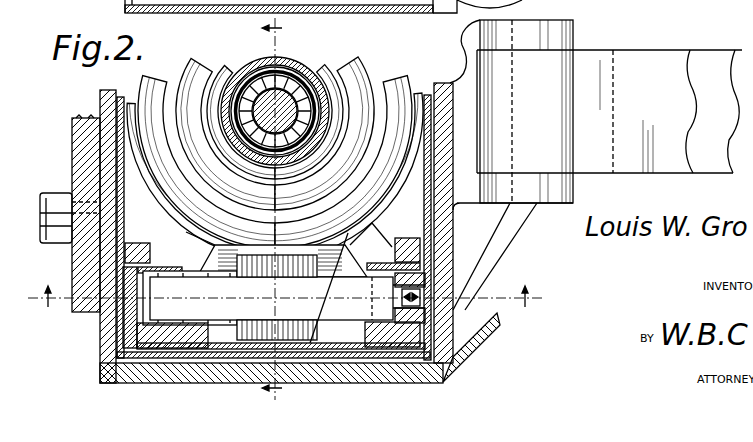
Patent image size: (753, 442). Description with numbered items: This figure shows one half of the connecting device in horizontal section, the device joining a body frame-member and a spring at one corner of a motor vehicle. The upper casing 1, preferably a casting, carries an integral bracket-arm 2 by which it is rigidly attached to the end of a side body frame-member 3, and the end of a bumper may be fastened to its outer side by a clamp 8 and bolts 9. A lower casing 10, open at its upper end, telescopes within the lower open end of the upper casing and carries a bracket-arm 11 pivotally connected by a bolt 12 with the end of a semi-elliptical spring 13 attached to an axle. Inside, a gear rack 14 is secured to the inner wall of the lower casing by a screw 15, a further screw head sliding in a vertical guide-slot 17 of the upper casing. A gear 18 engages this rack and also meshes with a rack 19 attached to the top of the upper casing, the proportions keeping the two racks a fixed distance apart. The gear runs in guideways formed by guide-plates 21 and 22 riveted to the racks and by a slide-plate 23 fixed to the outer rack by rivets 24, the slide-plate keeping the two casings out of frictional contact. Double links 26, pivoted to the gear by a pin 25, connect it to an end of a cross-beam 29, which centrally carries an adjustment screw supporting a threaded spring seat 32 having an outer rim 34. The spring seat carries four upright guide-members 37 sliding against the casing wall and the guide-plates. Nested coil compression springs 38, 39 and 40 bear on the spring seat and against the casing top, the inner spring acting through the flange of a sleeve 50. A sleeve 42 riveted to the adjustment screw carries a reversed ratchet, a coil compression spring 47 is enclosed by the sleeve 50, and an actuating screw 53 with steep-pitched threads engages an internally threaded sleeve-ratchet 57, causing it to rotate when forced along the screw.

The upper casing 1 is at (178, 364).
The bracket-arm 2 is at (483, 343).
The side body frame-member 3 is at (278, 209).
The clamp 8 is at (85, 170).
The bolts 9 is at (40, 206).
The lower casing 10 is at (100, 355).
The bracket-arm 11 is at (518, 222).
The bolt 12 is at (587, 43).
The semi-elliptical spring 13 is at (662, 70).
The gear rack 14 is at (453, 270).
The screw 15 is at (453, 304).
The vertical guide-slot 17 is at (440, 290).
The gear 18 is at (130, 362).
The rack 19 is at (97, 325).
The guide-plate 21 is at (386, 259).
The guide-plate 22 is at (76, 268).
The slide-plate 23 is at (362, 358).
The rivets 24 is at (100, 364).
The pin 25 is at (306, 243).
The double links 26 is at (245, 263).
The cross-beam 29 is at (225, 262).
The spring seat 32 is at (360, 182).
The outer rim 34 is at (162, 190).
The upright guide-members 37 is at (151, 253).
The coil compression spring 38 is at (160, 72).
The coil compression spring 39 is at (191, 62).
The coil compression spring 40 is at (226, 64).
The sleeve 42 is at (327, 67).
The coil compression spring 47 is at (302, 97).
The sleeve 50 is at (298, 68).
The actuating screw 53 is at (310, 107).
The sleeve-ratchet 57 is at (296, 66).